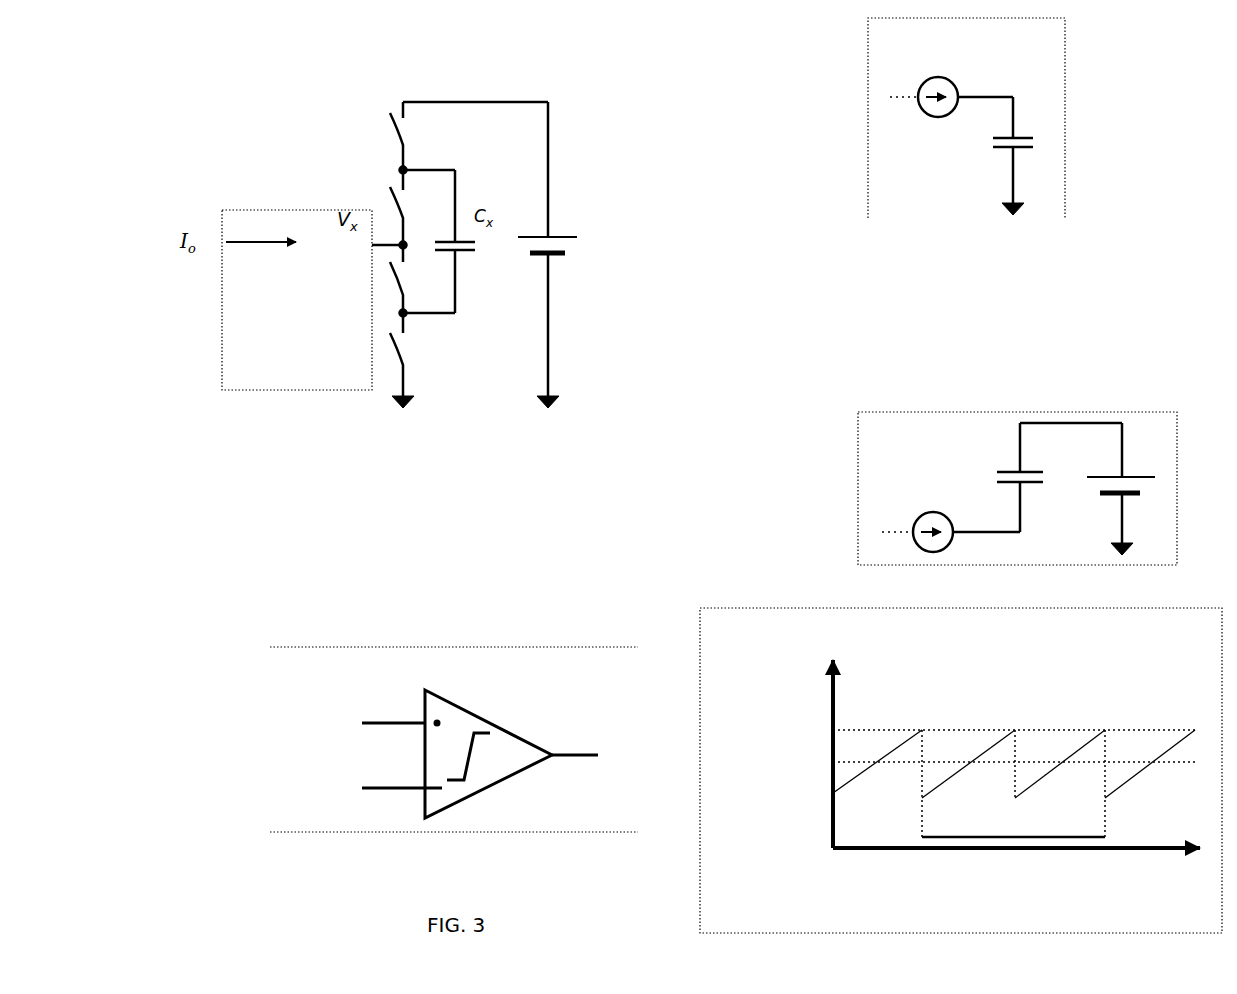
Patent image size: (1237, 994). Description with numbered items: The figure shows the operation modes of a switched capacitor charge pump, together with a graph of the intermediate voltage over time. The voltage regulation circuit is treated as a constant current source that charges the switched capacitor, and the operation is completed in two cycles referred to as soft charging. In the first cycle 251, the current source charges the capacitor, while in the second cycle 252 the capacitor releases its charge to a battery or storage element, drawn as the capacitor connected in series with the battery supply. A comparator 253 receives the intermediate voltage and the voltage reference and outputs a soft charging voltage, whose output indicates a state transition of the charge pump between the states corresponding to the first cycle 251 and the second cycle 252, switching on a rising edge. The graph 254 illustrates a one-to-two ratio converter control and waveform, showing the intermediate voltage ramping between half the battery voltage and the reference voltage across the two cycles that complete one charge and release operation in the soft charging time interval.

The first cycle 251 is at (843, 180).
The second cycle 252 is at (835, 383).
The comparator 253 is at (425, 690).
The graph 254 is at (737, 638).